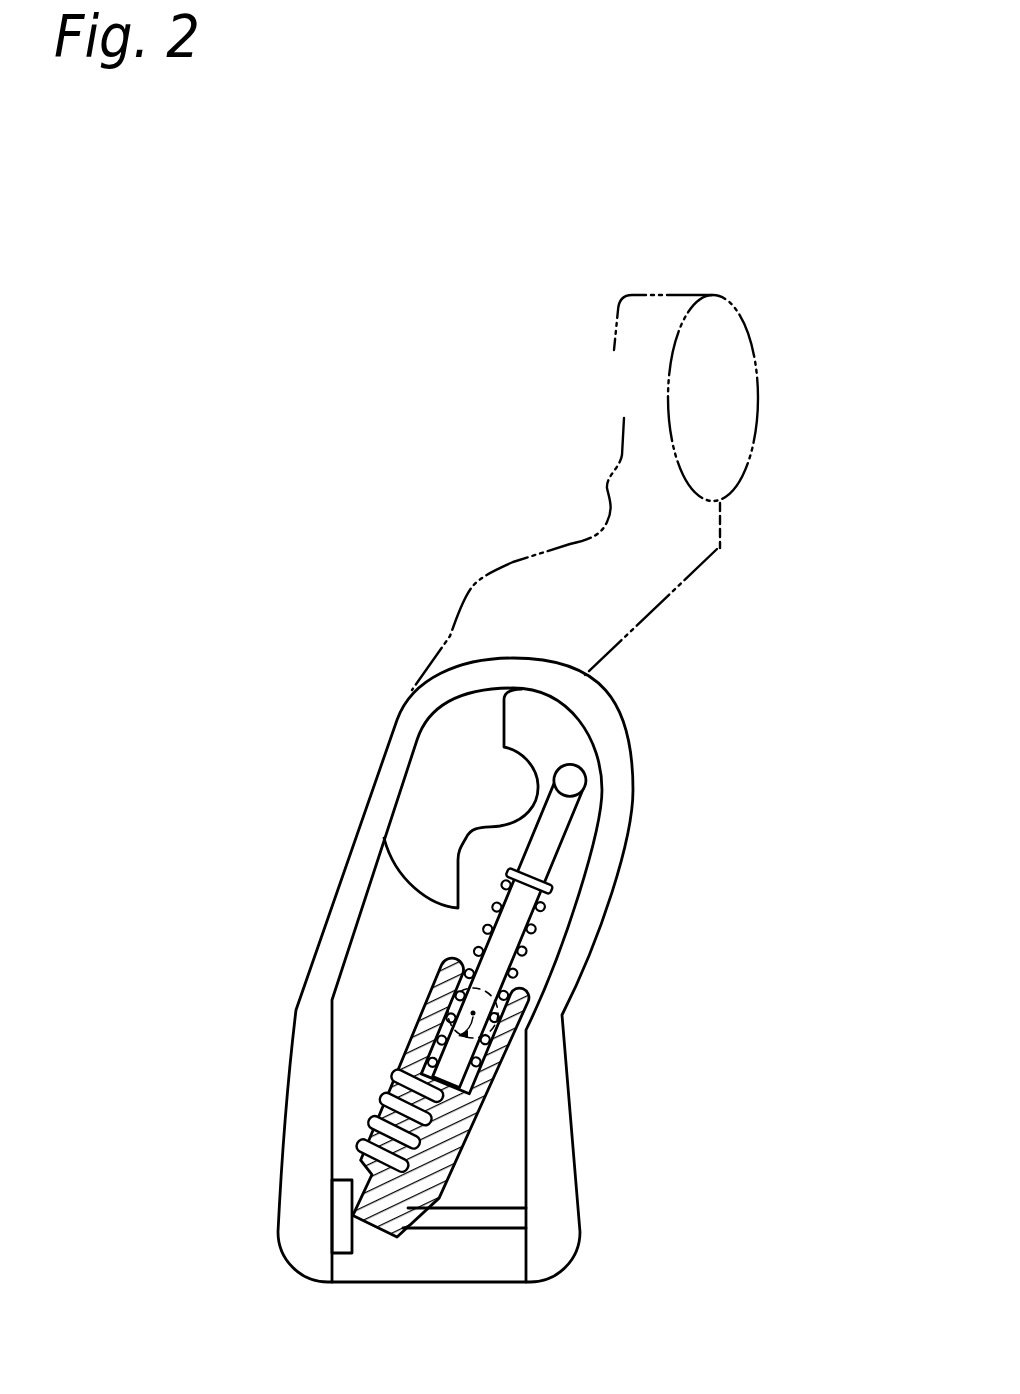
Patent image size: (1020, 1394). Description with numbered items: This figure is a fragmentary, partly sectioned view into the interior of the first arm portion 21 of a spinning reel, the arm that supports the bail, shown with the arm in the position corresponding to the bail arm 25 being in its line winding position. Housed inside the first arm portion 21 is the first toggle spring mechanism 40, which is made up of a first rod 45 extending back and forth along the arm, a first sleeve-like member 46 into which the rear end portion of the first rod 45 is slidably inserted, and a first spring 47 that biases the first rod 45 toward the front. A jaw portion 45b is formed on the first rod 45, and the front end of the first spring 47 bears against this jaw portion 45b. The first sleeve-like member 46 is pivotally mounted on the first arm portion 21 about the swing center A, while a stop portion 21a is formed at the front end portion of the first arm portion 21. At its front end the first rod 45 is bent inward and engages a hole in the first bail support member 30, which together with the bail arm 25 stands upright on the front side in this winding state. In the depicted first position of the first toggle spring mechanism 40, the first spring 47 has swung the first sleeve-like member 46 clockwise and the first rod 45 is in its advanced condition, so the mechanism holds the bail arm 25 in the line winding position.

The bail arm 25 is at (533, 525).
The first bail support member 30 is at (718, 548).
The first arm portion 21 is at (620, 795).
The stop portion 21a is at (494, 830).
The first toggle spring mechanism 40 is at (465, 1003).
The first rod 45 is at (548, 840).
The jaw portion 45b is at (558, 889).
The first spring 47 is at (540, 932).
The first sleeve-like member 46 is at (500, 1055).
The swing center A is at (413, 1046).